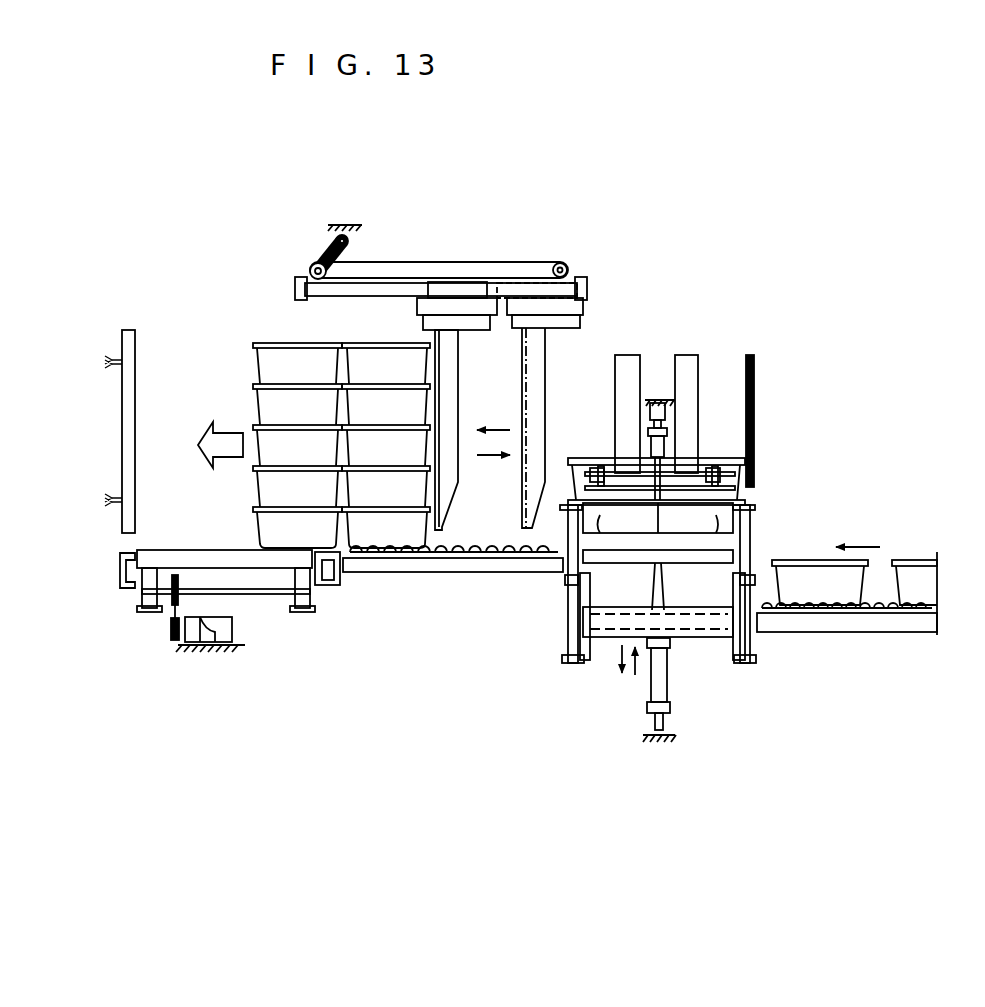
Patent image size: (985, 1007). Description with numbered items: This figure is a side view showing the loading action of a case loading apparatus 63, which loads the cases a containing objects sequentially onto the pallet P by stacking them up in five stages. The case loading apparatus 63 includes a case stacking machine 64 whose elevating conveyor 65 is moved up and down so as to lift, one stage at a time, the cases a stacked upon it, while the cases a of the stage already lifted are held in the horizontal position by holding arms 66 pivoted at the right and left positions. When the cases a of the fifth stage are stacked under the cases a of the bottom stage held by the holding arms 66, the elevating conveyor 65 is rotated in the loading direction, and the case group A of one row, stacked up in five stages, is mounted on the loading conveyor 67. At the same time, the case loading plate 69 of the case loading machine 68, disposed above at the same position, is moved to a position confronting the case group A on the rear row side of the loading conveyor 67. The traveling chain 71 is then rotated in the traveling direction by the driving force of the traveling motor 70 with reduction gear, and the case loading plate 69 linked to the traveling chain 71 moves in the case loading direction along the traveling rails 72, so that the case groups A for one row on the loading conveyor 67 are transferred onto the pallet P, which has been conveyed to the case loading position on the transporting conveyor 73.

The case loading apparatus 63 is at (727, 473).
The case stacking machine 64 is at (786, 432).
The elevating conveyor 65 is at (694, 640).
The holding arms 66 is at (748, 536).
The loading conveyor 67 is at (388, 566).
The case loading machine 68 is at (446, 340).
The case loading plate 69 is at (548, 420).
The traveling motor with reduction gear 70 is at (355, 238).
The traveling chain 71 is at (515, 265).
The traveling rails 72 is at (400, 288).
The transporting conveyor 73 is at (125, 593).
The pallet P is at (222, 550).
The case group A is at (360, 340).
The case a is at (262, 402).